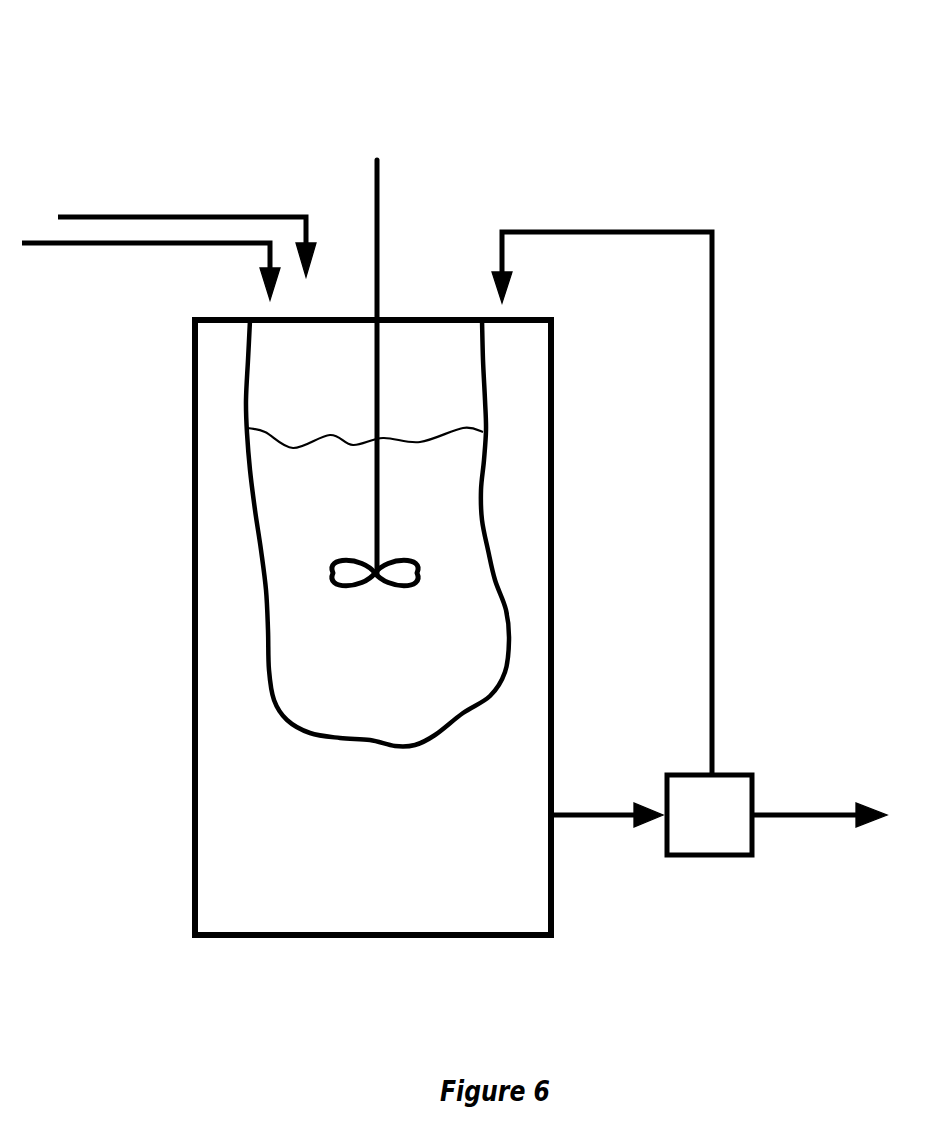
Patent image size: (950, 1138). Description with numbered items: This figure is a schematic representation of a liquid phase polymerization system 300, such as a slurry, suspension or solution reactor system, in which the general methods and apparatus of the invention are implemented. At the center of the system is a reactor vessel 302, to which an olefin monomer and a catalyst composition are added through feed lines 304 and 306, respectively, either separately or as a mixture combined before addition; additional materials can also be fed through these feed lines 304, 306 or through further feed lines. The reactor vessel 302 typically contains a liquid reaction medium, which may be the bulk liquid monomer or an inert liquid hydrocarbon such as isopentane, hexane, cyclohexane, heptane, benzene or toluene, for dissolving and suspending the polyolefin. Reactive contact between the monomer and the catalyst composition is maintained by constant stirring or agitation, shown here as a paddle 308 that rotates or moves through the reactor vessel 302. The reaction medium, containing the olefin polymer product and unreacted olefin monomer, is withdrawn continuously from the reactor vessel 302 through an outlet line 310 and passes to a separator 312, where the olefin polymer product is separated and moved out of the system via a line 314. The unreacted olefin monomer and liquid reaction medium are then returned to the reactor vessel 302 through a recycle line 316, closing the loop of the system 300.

The liquid phase polymerization system 300 is at (85, 109).
The reactor vessel 302 is at (192, 513).
The feed line 304 is at (120, 246).
The feed line 306 is at (236, 214).
The paddle 308 is at (380, 212).
The outlet line 310 is at (578, 818).
The separator 312 is at (706, 857).
The line 314 is at (784, 818).
The recycle line 316 is at (713, 497).